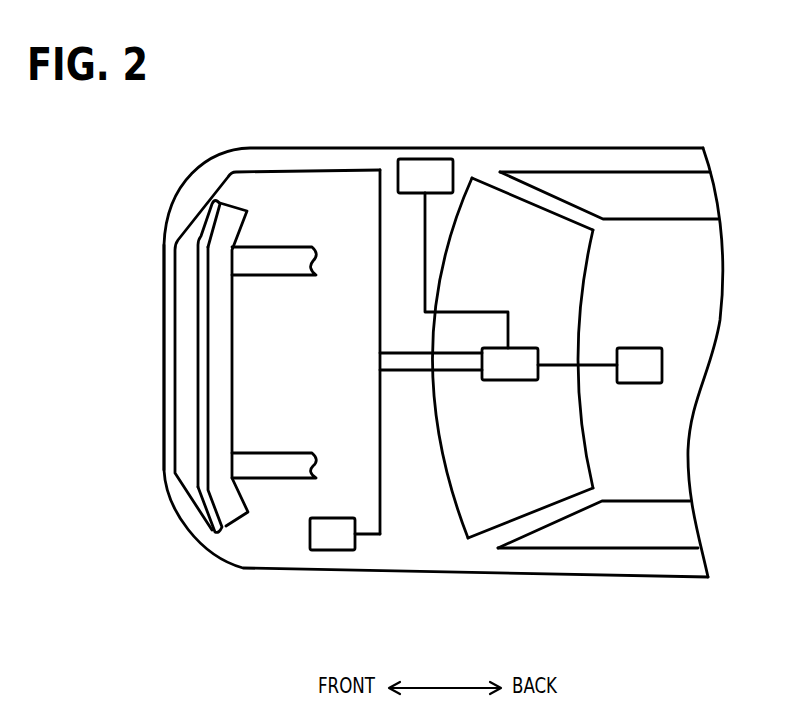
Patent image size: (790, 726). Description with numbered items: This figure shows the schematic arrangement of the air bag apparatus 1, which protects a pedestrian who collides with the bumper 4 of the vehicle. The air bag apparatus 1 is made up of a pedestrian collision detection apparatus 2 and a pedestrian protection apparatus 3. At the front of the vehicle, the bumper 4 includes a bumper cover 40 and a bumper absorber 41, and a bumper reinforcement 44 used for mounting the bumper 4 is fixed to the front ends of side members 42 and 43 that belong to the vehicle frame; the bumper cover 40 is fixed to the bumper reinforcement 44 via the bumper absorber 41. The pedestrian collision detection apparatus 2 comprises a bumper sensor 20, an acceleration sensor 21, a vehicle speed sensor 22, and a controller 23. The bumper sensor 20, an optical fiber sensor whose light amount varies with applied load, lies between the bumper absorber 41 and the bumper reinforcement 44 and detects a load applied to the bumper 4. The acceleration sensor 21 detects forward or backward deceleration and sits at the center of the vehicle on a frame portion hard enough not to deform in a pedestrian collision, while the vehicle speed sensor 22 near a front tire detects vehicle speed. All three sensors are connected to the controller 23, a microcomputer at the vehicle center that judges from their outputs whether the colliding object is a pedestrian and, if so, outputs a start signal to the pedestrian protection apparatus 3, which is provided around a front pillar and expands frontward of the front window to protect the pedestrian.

The air bag apparatus 1 is at (504, 72).
The pedestrian collision detection apparatus 2 is at (507, 450).
The pedestrian protection apparatus 3 is at (425, 159).
The bumper 4 is at (238, 351).
The bumper sensor 20 is at (203, 250).
The acceleration sensor 21 is at (648, 350).
The vehicle speed sensor 22 is at (343, 549).
The controller 23 is at (507, 382).
The bumper cover 40 is at (163, 376).
The bumper absorber 41 is at (178, 407).
The side member 42 is at (282, 255).
The side member 43 is at (280, 462).
The bumper reinforcement 44 is at (213, 442).